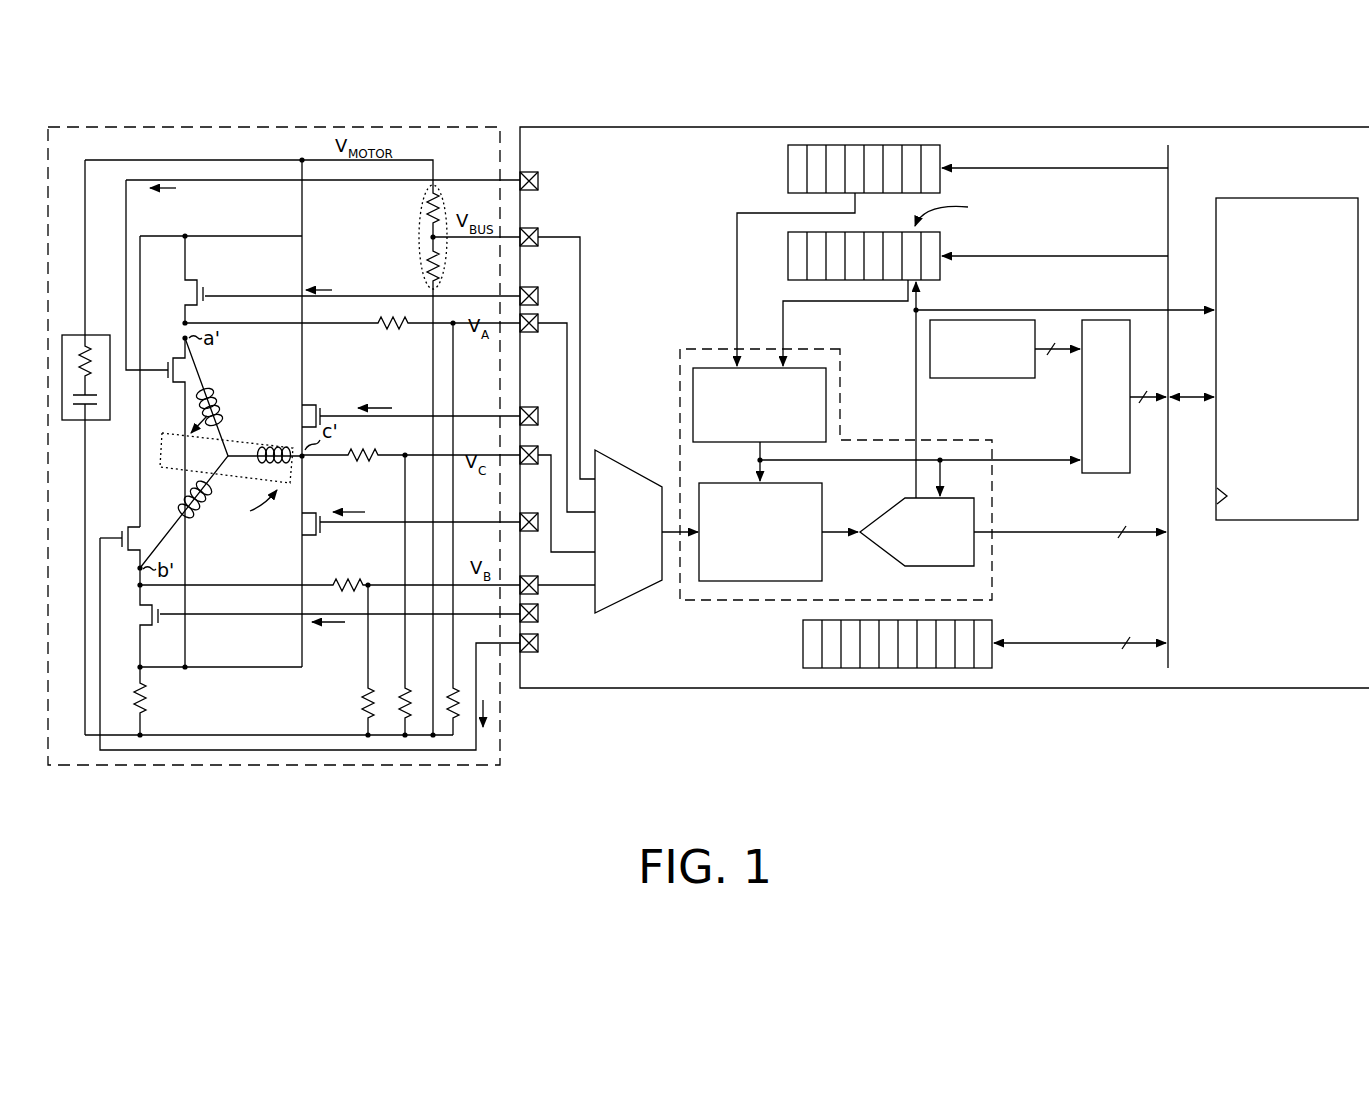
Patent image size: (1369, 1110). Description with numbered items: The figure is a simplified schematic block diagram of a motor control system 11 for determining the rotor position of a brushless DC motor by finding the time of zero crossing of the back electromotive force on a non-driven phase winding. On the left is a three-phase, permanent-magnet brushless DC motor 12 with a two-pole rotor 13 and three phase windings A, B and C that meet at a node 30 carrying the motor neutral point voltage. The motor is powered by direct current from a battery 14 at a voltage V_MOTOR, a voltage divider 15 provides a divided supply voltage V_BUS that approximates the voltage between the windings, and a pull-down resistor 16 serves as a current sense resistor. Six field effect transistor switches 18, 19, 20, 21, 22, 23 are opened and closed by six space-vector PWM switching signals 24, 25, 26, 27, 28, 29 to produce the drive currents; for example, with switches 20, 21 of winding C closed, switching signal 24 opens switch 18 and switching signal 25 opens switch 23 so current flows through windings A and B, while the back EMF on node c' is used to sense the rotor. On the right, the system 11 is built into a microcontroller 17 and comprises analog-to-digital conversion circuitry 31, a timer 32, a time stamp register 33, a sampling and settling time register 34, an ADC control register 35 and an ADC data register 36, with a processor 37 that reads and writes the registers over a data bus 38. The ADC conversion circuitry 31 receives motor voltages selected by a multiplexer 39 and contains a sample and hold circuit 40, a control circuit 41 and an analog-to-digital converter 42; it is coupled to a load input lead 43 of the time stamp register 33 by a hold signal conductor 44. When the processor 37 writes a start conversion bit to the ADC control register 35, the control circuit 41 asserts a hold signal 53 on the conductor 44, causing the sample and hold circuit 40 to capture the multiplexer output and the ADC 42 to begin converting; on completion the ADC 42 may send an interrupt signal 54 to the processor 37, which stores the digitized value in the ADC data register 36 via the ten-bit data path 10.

The data bus 10 is at (1124, 575).
The motor control system 11 is at (674, 236).
The brushless DC motor 12 is at (285, 127).
The rotor 13 is at (174, 470).
The battery 14 is at (94, 335).
The voltage divider 15 is at (420, 220).
The pull-down resistor 16 is at (147, 698).
The microcontroller 17 is at (1057, 127).
The field effect transistor switch 18 is at (198, 280).
The field effect transistor switch 19 is at (164, 360).
The field effect transistor switch 20 is at (316, 404).
The field effect transistor switch 21 is at (317, 540).
The field effect transistor switch 22 is at (125, 530).
The field effect transistor switch 23 is at (157, 628).
The switching signal 24 is at (333, 289).
The switching signal 25 is at (333, 623).
The switching signal 26 is at (385, 408).
The switching signal 27 is at (358, 512).
The switching signal 28 is at (177, 189).
The switching signal 29 is at (487, 713).
The node 30 is at (234, 452).
The analog-to-digital conversion circuitry 31 is at (876, 440).
The timer 32 is at (972, 344).
The time stamp register 33 is at (1095, 389).
The sampling and settling time register 34 is at (789, 169).
The ADC control register 35 is at (789, 258).
The ADC data register 36 is at (803, 646).
The processor 37 is at (1276, 392).
The data bus 38 is at (1169, 603).
The multiplexer 39 is at (617, 515).
The sample and hold circuit 40 is at (749, 507).
The control circuit 41 is at (749, 392).
The analog-to-digital converter 42 is at (929, 529).
The load input lead 43 is at (1082, 466).
The hold signal conductor 44 is at (859, 462).
The hold signal 53 is at (1050, 453).
The interrupt signal 54 is at (1017, 302).